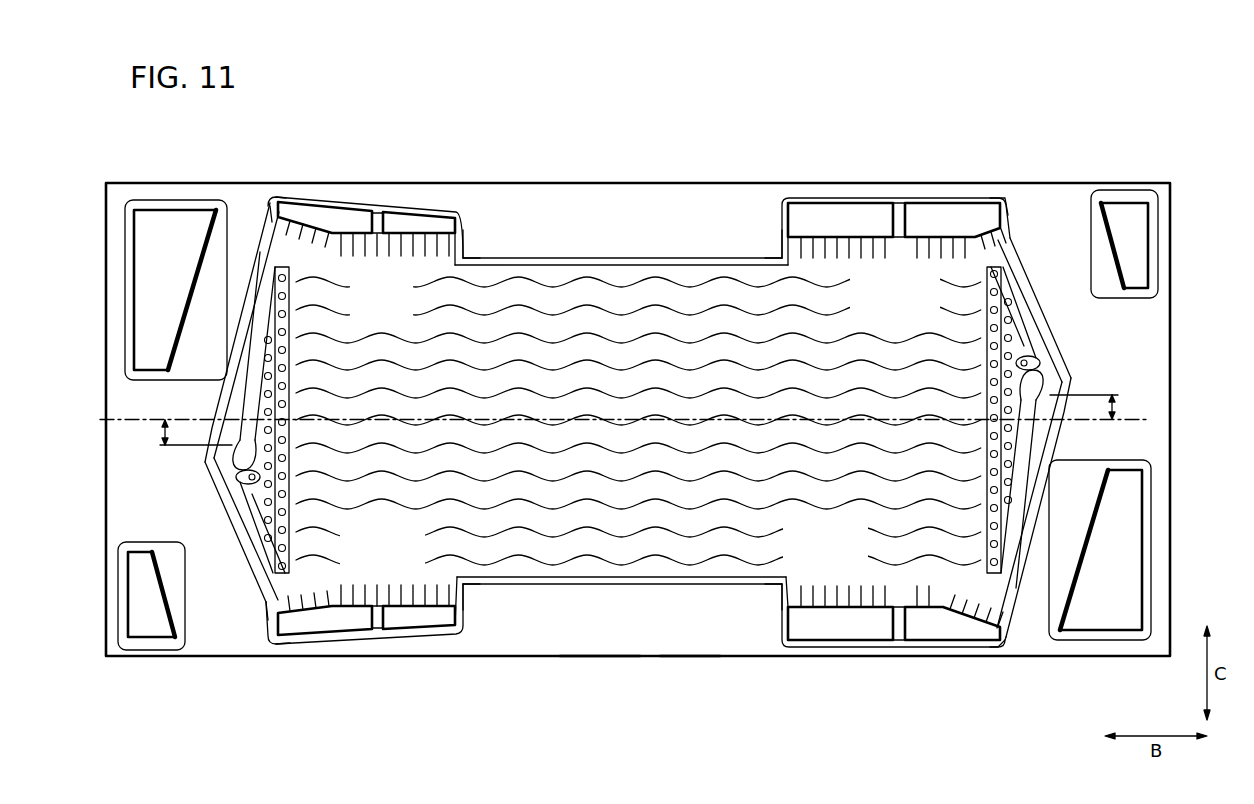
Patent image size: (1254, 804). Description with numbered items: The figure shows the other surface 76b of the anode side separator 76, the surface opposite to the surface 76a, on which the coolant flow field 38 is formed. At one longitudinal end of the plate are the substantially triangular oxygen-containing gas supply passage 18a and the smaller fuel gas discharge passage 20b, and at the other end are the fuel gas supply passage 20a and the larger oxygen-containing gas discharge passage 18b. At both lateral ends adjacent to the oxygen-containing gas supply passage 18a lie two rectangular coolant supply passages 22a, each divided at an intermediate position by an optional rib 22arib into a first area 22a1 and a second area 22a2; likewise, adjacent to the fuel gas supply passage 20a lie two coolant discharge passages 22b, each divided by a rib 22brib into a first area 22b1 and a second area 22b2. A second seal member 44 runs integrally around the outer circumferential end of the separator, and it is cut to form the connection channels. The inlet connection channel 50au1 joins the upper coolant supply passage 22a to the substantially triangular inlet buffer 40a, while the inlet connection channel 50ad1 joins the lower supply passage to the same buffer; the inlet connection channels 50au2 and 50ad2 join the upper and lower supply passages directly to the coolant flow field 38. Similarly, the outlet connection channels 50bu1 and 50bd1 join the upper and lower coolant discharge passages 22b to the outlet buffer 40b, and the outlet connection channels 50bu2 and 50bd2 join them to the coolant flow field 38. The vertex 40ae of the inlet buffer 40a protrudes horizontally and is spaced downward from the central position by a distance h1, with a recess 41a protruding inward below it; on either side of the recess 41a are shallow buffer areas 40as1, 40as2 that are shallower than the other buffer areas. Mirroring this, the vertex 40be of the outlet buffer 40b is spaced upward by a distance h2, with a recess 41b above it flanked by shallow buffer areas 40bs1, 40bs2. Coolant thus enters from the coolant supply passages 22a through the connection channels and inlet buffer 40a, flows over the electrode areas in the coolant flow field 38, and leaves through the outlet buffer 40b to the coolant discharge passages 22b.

The anode side separator 76 is at (513, 104).
The surface of the anode side separator 76a is at (684, 641).
The surface of the anode side separator 76b is at (614, 641).
The oxygen-containing gas supply passage 18a is at (157, 227).
The oxygen-containing gas discharge passage 18b is at (1097, 613).
The fuel gas supply passage 20a is at (1125, 225).
The fuel gas discharge passage 20b is at (150, 617).
The coolant flow field 38 is at (597, 585).
The second seal member 44 is at (654, 585).
The coolant supply passage 22a is at (364, 421).
The first area 22a1 is at (328, 219).
The second area 22a2 is at (408, 222).
The rib 22arib is at (378, 236).
The coolant discharge passage 22b is at (896, 422).
The first area 22b1 is at (928, 218).
The second area 22b2 is at (853, 218).
The rib 22brib is at (903, 238).
The inlet connection channel 50au1 is at (302, 218).
The inlet connection channel 50au2 is at (440, 248).
The outlet connection channel 50bu1 is at (997, 241).
The outlet connection channel 50bu2 is at (808, 252).
The inlet connection channel 50ad1 is at (282, 603).
The inlet connection channel 50ad2 is at (446, 601).
The outlet connection channel 50bd1 is at (973, 619).
The outlet connection channel 50bd2 is at (810, 596).
The inlet buffer 40a is at (262, 383).
The vertex 40ae is at (207, 464).
The shallow buffer area 40as1 is at (247, 411).
The shallow buffer area 40as2 is at (253, 523).
The recess 41a is at (243, 489).
The outlet buffer 40b is at (1005, 318).
The vertex 40be is at (1042, 393).
The shallow buffer area 40bs1 is at (1028, 338).
The shallow buffer area 40bs2 is at (1020, 457).
The recess 41b is at (1020, 365).
The distance h1 is at (185, 432).
The distance h2 is at (1095, 408).